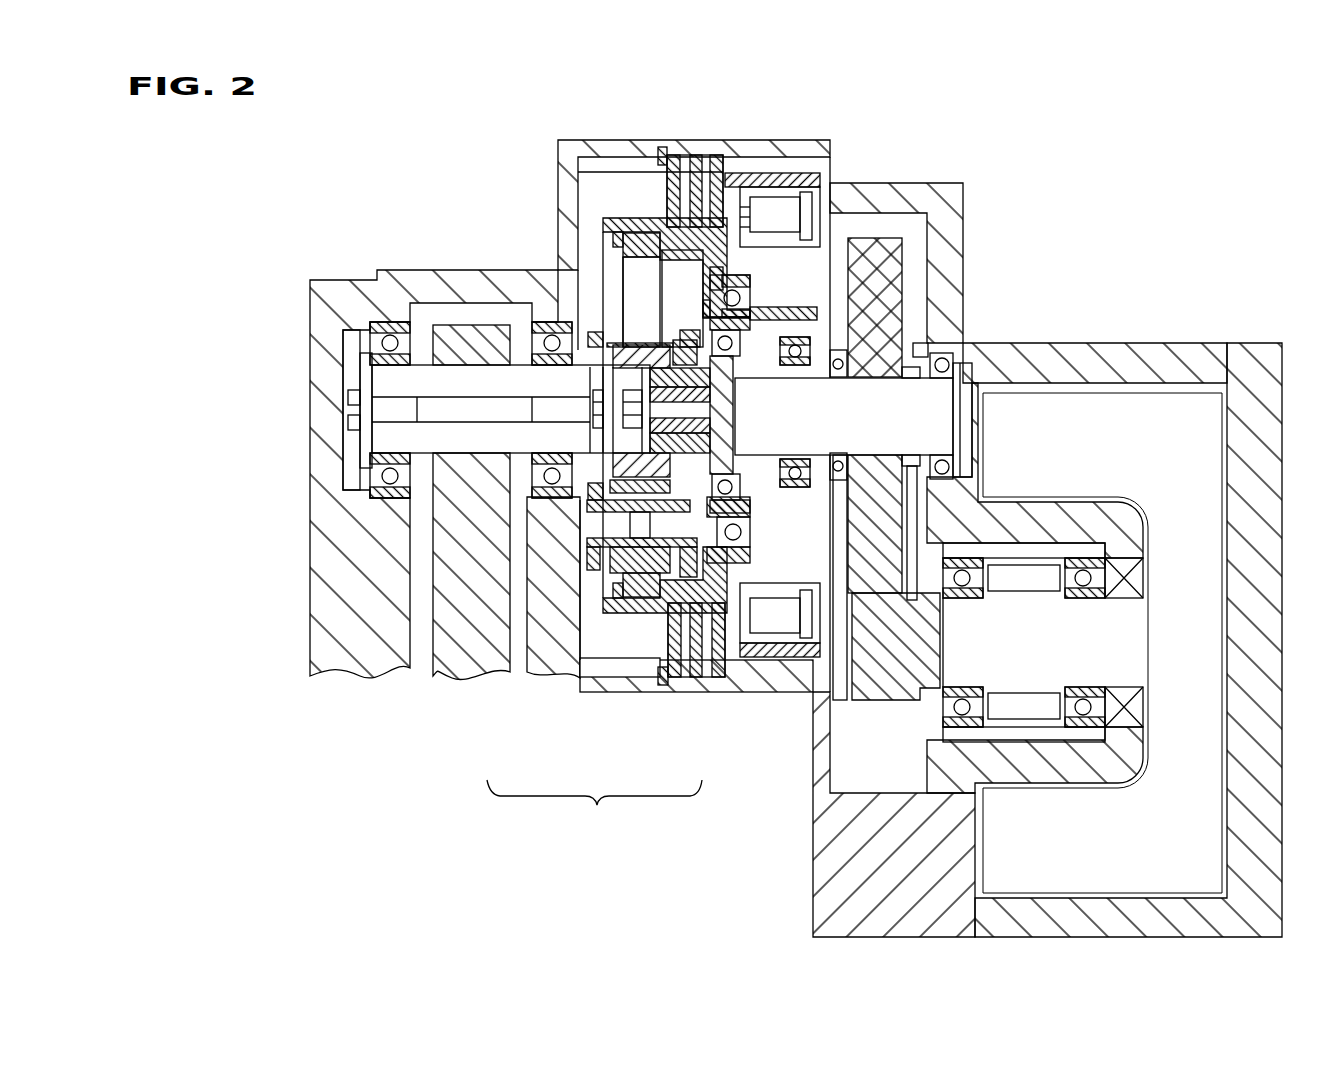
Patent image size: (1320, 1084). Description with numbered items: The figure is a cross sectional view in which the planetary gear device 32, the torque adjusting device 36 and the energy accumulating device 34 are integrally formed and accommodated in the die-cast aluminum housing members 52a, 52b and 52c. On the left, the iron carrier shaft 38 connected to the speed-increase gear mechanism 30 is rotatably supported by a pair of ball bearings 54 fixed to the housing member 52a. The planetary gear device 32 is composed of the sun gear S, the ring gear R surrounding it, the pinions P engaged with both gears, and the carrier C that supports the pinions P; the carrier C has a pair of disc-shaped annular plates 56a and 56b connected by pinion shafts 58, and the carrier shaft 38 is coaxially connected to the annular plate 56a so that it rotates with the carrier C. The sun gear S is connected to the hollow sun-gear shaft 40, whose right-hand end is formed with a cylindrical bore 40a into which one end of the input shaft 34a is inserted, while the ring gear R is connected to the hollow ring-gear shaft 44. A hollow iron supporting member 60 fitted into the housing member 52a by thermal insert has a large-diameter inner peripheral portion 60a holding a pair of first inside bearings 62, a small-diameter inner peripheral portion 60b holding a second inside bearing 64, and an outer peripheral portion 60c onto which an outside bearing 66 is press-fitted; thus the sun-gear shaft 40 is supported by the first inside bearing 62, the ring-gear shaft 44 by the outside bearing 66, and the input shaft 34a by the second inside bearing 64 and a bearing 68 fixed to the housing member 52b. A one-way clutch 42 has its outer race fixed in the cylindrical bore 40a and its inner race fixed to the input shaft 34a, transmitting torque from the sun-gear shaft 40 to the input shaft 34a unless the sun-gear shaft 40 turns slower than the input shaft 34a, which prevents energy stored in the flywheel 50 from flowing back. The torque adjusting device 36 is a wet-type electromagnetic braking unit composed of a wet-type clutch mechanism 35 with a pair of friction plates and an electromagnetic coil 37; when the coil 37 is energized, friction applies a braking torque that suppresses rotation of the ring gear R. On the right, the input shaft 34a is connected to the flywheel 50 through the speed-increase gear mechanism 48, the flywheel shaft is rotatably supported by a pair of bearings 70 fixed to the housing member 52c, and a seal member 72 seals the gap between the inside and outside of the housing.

The speed-increase gear mechanism 30 is at (415, 676).
The planetary gear device 32 is at (600, 128).
The energy accumulating device 34 is at (1040, 178).
The input shaft 34a is at (912, 362).
The wet-type clutch mechanism 35 is at (730, 660).
The torque adjusting device 36 is at (775, 702).
The electromagnetic coil 37 is at (738, 230).
The carrier shaft 38 is at (457, 680).
The sun-gear shaft 40 is at (770, 262).
The cylindrical bore 40a is at (720, 407).
The one-way clutch 42 is at (795, 452).
The ring-gear shaft 44 is at (688, 200).
The speed-increase gear mechanism 48 is at (843, 640).
The flywheel 50 is at (1105, 385).
The housing member 52a is at (377, 271).
The housing member 52b is at (963, 188).
The housing member 52c is at (1130, 385).
The bearings 54 is at (547, 318).
The annular plate 56a is at (615, 615).
The annular plate 56b is at (705, 660).
The pinion shafts 58 is at (607, 585).
The supporting member 60 is at (855, 320).
The large-diameter inner peripheral portion 60a is at (765, 205).
The small-diameter inner peripheral portion 60b is at (910, 355).
The outer peripheral portion 60c is at (715, 312).
The first inside bearings 62 is at (760, 368).
The second inside bearing 64 is at (858, 455).
The outside bearing 66 is at (712, 290).
The bearing 68 is at (946, 356).
The bearings 70 is at (967, 548).
The seal member 72 is at (1140, 572).
The ring gear R is at (650, 215).
The sun gear S is at (612, 340).
The pinions P is at (612, 678).
The carrier C is at (594, 812).